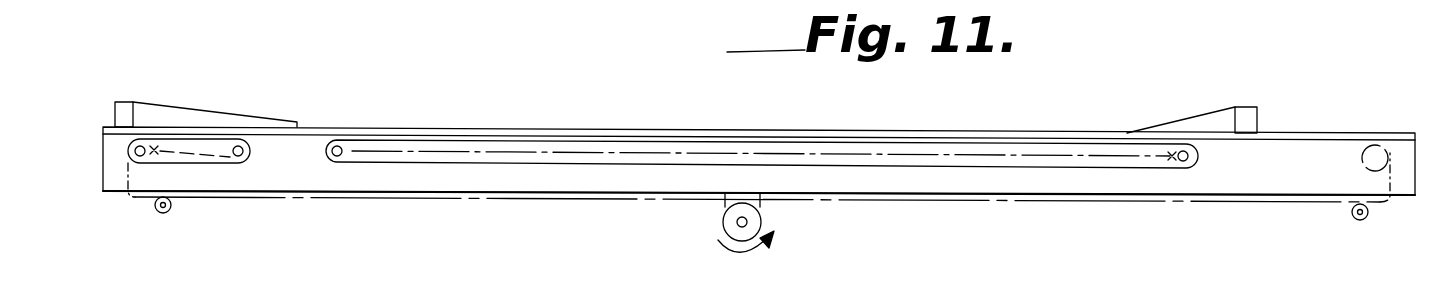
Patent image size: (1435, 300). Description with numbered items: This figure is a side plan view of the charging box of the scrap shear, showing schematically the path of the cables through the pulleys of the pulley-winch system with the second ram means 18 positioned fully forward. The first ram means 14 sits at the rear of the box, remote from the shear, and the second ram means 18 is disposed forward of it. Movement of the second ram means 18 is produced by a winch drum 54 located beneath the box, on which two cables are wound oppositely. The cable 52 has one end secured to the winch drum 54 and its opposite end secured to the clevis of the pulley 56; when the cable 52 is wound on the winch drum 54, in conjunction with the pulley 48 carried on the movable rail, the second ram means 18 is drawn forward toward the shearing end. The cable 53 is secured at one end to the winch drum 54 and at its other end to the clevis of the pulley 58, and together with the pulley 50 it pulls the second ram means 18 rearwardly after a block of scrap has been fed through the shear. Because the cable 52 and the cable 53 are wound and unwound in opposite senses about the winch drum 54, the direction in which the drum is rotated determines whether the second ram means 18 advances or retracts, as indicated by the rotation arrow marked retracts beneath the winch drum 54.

The first ram means 14 is at (1247, 107).
The second ram means 18 is at (173, 106).
The pulley 48 is at (251, 143).
The pulley 50 is at (343, 134).
The cable 52 is at (510, 202).
The cable 53 is at (937, 202).
The winch drum 54 is at (760, 222).
The pulley 56 is at (128, 150).
The pulley 58 is at (1190, 142).